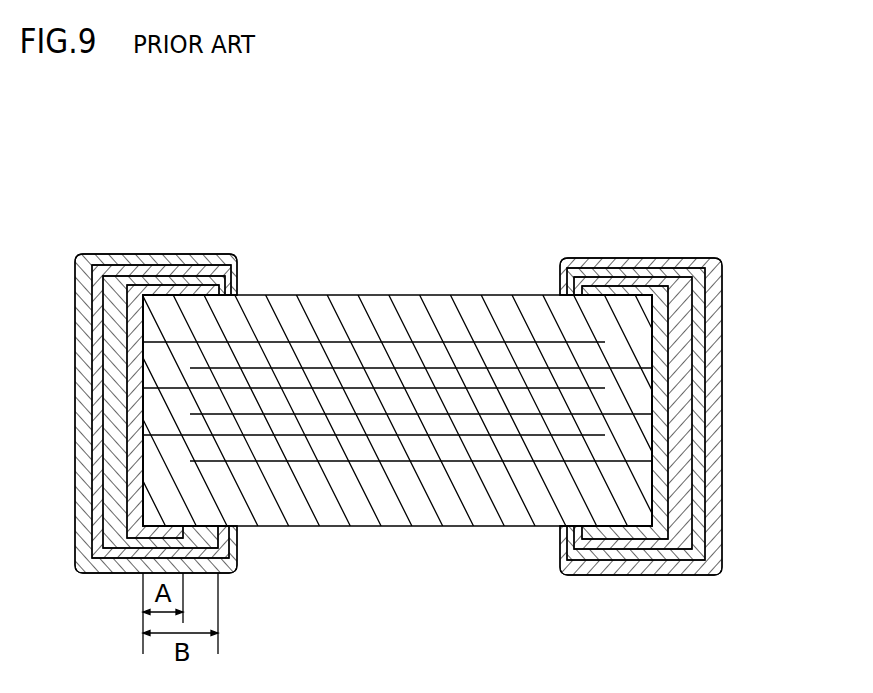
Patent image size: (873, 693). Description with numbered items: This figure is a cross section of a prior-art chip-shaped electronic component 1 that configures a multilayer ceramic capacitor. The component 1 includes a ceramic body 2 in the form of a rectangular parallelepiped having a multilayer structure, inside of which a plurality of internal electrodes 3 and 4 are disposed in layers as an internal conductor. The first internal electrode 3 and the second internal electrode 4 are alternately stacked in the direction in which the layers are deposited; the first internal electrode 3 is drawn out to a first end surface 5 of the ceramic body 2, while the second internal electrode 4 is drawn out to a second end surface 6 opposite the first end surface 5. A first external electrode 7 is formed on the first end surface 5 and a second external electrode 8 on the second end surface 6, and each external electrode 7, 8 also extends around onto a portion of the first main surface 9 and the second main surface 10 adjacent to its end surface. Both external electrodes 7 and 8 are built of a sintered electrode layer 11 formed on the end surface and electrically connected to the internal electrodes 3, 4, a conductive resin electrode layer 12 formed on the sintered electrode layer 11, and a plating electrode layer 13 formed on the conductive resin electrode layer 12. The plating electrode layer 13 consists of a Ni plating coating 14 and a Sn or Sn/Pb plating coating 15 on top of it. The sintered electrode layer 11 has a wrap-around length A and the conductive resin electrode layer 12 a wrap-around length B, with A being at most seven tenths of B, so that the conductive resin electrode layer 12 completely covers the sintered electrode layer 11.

The chip-shaped electronic component 1 is at (434, 354).
The ceramic body 2 is at (283, 530).
The first internal electrode 3 is at (353, 368).
The second internal electrode 4 is at (437, 461).
The first end surface 5 is at (105, 412).
The second end surface 6 is at (655, 326).
The first external electrode 7 is at (203, 235).
The second external electrode 8 is at (808, 396).
The first main surface 9 is at (433, 295).
The second main surface 10 is at (345, 527).
The sintered electrode layer 11 is at (178, 255).
The conductive resin electrode layer 12 is at (136, 255).
The plating electrode layer 13 is at (442, 348).
The Ni plating coating 14 is at (112, 255).
The Sn or Sn/Pb plating coating 15 is at (87, 255).